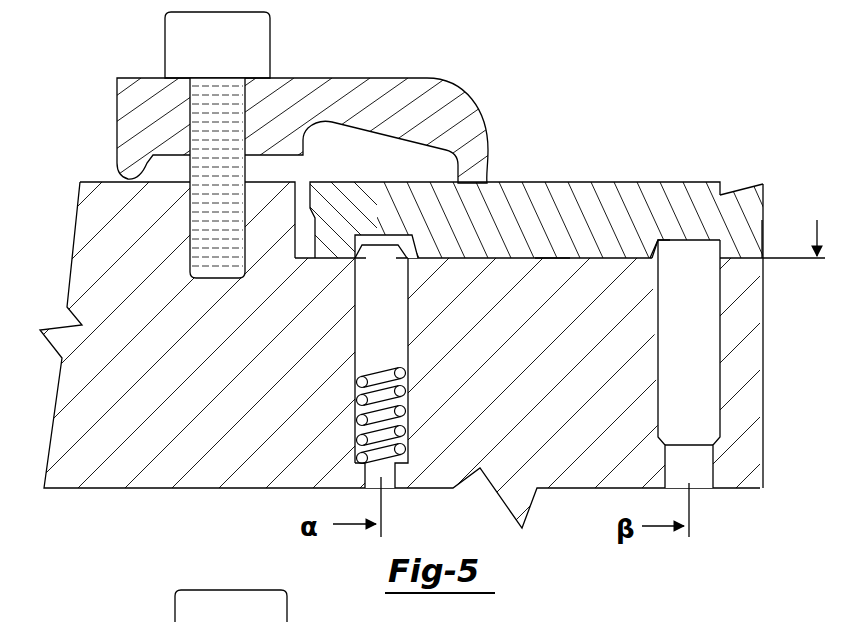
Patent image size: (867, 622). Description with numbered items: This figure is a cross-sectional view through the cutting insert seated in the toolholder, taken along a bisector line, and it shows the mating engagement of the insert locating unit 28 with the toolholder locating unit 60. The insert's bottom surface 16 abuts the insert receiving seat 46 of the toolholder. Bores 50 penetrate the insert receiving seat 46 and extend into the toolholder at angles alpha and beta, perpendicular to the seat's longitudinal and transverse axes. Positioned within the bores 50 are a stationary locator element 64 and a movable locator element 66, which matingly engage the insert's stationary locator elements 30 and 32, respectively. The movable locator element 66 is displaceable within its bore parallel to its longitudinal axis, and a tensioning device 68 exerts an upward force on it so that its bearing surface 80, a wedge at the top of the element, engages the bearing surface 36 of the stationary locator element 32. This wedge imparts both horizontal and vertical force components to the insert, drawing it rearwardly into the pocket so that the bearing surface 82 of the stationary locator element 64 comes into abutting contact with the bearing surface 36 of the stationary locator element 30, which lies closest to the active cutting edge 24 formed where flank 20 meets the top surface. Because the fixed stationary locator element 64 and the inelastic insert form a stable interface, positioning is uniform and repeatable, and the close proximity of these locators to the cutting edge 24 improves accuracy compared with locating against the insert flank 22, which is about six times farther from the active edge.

The flank 22 is at (298, 198).
The bearing surface 36 is at (372, 234).
The stationary locator element 32 is at (390, 198).
The insert receiving seat 46 is at (552, 256).
The stationary locator element 30 is at (650, 255).
The cutting edge 24 is at (763, 184).
The flank 20 is at (762, 213).
The insert locating unit 28 is at (768, 242).
The toolholder locating unit 60 is at (771, 288).
The bottom surface 16 is at (582, 262).
The bearing surface 80 is at (389, 272).
The movable locator element 66 is at (388, 347).
The bearing surface 82 is at (691, 275).
The stationary locator element 64 is at (696, 344).
The bores 50 is at (699, 478).
The tensioning device 68 is at (358, 420).